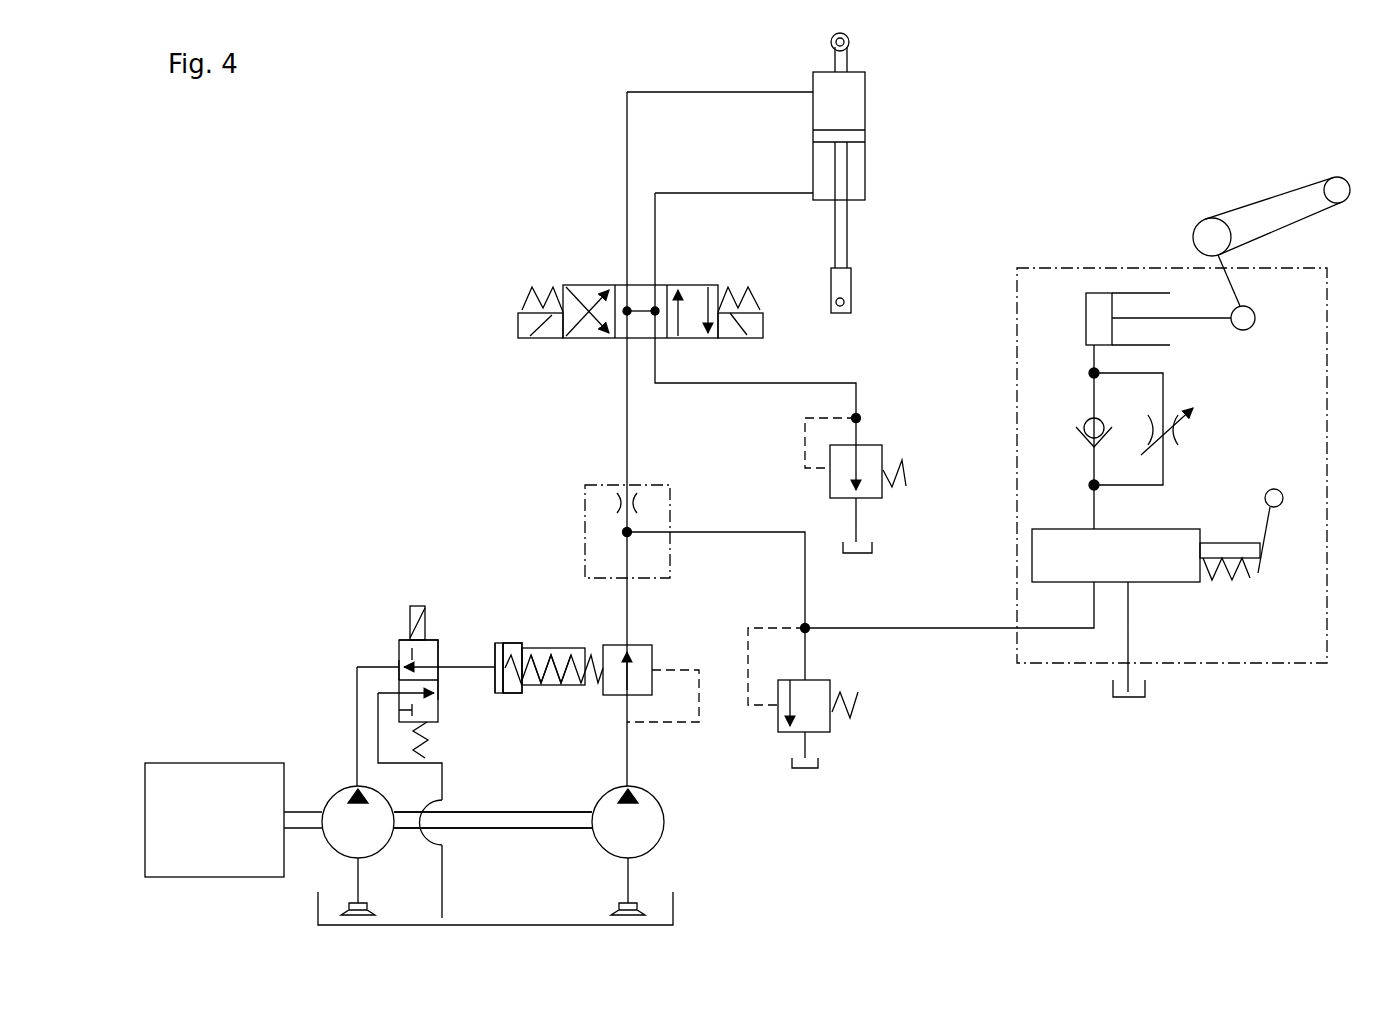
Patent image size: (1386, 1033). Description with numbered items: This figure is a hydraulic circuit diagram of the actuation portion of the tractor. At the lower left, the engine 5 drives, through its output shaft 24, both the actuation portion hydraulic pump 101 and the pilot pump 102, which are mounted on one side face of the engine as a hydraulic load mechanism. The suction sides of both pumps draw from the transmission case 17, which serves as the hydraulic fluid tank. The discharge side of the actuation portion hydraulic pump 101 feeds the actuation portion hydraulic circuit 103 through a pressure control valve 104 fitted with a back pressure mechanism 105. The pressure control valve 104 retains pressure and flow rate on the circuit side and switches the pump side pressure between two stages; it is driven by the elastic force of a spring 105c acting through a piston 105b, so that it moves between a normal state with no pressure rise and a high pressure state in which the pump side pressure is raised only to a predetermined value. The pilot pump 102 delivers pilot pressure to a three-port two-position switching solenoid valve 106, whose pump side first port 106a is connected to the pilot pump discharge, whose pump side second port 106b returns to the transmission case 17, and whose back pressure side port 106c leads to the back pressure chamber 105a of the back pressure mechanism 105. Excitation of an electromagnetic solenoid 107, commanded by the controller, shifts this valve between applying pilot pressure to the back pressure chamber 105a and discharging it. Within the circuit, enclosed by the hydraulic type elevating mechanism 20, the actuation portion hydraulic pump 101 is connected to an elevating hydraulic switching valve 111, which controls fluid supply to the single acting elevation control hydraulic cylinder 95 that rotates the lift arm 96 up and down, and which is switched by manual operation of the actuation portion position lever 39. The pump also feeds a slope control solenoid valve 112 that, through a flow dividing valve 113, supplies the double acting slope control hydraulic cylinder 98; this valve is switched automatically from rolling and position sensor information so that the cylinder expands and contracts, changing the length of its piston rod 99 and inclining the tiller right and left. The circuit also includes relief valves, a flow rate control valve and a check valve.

The engine 5 is at (240, 834).
The transmission case 17 is at (673, 897).
The hydraulic type elevating mechanism 20 is at (1014, 370).
The output shaft 24 is at (468, 828).
The actuation portion position lever 39 is at (1264, 490).
The elevation control hydraulic cylinder 95 is at (1099, 293).
The lift arm 96 is at (1265, 213).
The slope control hydraulic cylinder 98 is at (865, 170).
The piston rod 99 is at (847, 228).
The actuation portion hydraulic pump 101 is at (608, 835).
The pilot pump 102 is at (338, 795).
The actuation portion hydraulic circuit 103 is at (1002, 170).
The pressure control valve 104 is at (625, 645).
The back pressure mechanism 105 is at (528, 707).
The back pressure chamber 105a is at (495, 648).
The piston 105b is at (508, 643).
The spring 105c is at (560, 688).
The switching solenoid valve 106 is at (438, 715).
The pump side first port 106a is at (400, 648).
The pump side second port 106b is at (399, 667).
The back pressure side port 106c is at (438, 672).
The electromagnetic solenoid 107 is at (416, 606).
The elevating hydraulic switching valve 111 is at (1045, 550).
The slope control solenoid valve 112 is at (693, 285).
The flow dividing valve 113 is at (652, 485).